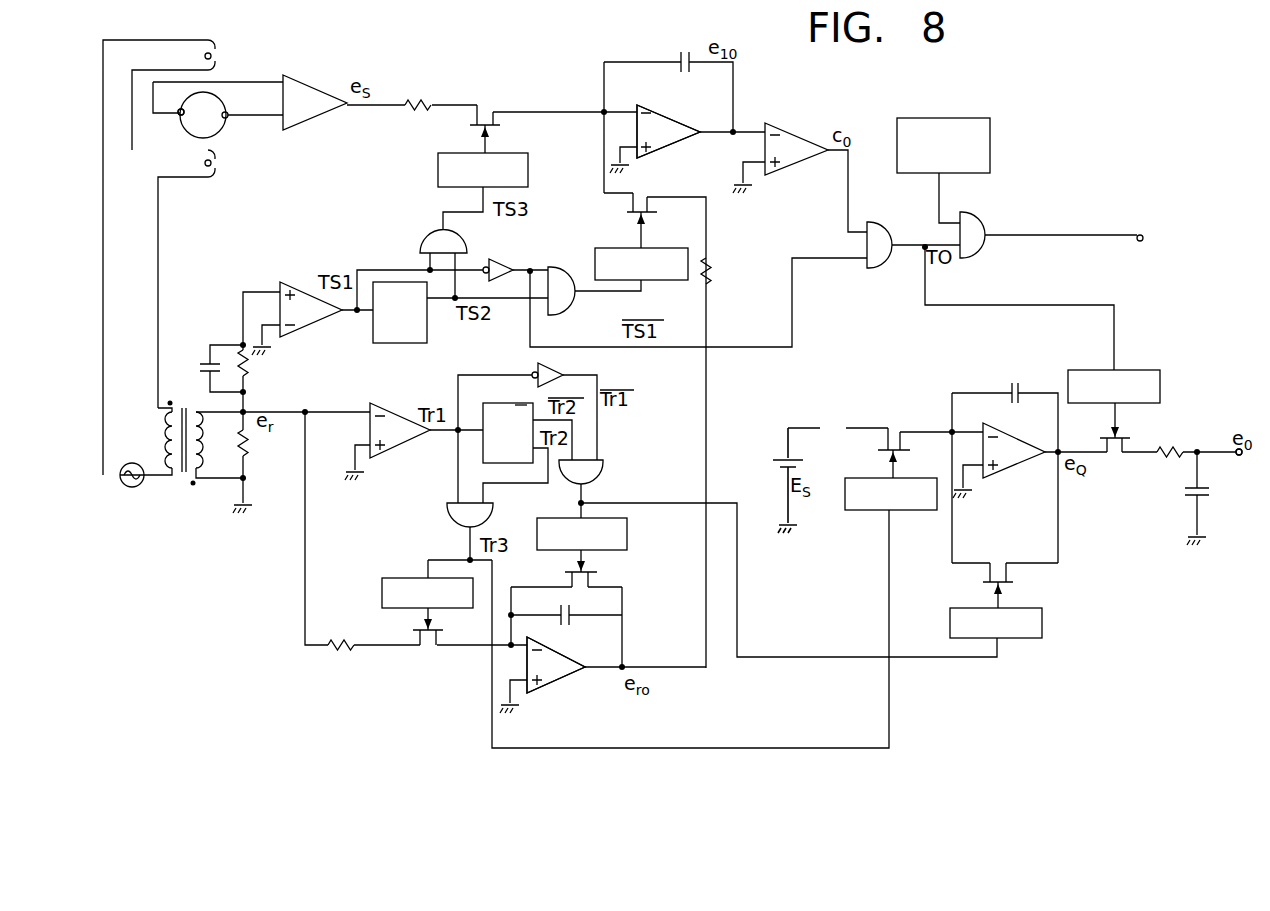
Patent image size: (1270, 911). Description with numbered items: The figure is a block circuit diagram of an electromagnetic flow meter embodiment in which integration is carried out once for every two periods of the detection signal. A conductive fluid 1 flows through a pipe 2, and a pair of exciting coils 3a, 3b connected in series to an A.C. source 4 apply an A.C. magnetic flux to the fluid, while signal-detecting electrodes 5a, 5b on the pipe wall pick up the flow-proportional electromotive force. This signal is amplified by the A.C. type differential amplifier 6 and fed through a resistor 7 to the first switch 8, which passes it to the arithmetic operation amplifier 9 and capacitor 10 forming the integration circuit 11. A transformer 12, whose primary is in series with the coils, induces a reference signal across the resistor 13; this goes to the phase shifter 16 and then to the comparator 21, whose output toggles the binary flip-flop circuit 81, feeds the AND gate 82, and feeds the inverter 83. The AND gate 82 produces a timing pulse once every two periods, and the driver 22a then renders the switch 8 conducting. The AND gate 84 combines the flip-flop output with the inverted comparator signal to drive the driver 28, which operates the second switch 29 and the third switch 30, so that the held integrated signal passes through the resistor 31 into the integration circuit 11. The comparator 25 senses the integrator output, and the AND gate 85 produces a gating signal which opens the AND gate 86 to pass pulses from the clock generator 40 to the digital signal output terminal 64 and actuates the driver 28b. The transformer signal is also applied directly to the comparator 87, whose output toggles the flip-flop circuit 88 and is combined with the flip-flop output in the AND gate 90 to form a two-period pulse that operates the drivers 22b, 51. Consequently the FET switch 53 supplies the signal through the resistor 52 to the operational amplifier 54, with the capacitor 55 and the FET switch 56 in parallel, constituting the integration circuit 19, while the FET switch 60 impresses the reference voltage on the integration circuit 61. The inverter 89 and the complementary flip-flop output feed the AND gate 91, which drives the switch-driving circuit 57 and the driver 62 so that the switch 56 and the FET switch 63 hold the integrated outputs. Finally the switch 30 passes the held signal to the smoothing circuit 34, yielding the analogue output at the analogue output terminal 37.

The conductive fluid 1 is at (180, 101).
The pipe 2 is at (221, 132).
The exciting coil 3a is at (222, 52).
The exciting coil 3b is at (220, 166).
The A.C. source 4 is at (141, 487).
The signal-detecting electrode 5a is at (228, 112).
The signal-detecting electrode 5b is at (178, 116).
The A.C. type differential amplifier 6 is at (304, 85).
The resistor 7 is at (417, 100).
The first switch 8 is at (485, 100).
The arithmetic operation amplifier 9 is at (670, 118).
The capacitor 10 is at (681, 58).
The integration circuit 11 is at (668, 99).
The transformer 12 is at (179, 406).
The resistor 13 is at (247, 445).
The phase shifter 16 is at (240, 352).
The integration circuit 19 is at (600, 651).
The comparator 21 is at (292, 335).
The driver 22a is at (438, 170).
The driver 22b is at (382, 593).
The comparator 25 is at (798, 122).
The driver 28 is at (616, 248).
The driver 28b is at (1160, 387).
The second switch 29 is at (645, 196).
The third switch 30 is at (1110, 456).
The resistor 31 is at (711, 272).
The smoothing circuit 34 is at (1168, 446).
The analogue output terminal 37 is at (1239, 456).
The clock generator 40 is at (943, 118).
The driver 51 is at (862, 512).
The resistor 52 is at (339, 652).
The FET switch 53 is at (427, 650).
The operational amplifier 54 is at (560, 685).
The capacitor 55 is at (572, 612).
The FET switch 56 is at (598, 574).
The switch-driving circuit 57 is at (627, 536).
The FET switch 60 is at (893, 432).
The integration circuit 61 is at (1020, 468).
The driver 62 is at (1042, 624).
The FET switch 63 is at (1000, 572).
The digital signal output terminal 64 is at (1140, 242).
The binary flip-flop circuit 81 is at (427, 330).
The AND gate 82 is at (429, 236).
The inverter 83 is at (506, 254).
The AND gate 84 is at (572, 303).
The AND gate 85 is at (877, 268).
The AND gate 86 is at (983, 246).
The comparator 87 is at (400, 455).
The flip-flop circuit 88 is at (513, 401).
The inverter 89 is at (563, 372).
The AND gate 90 is at (448, 508).
The AND gate 91 is at (603, 468).